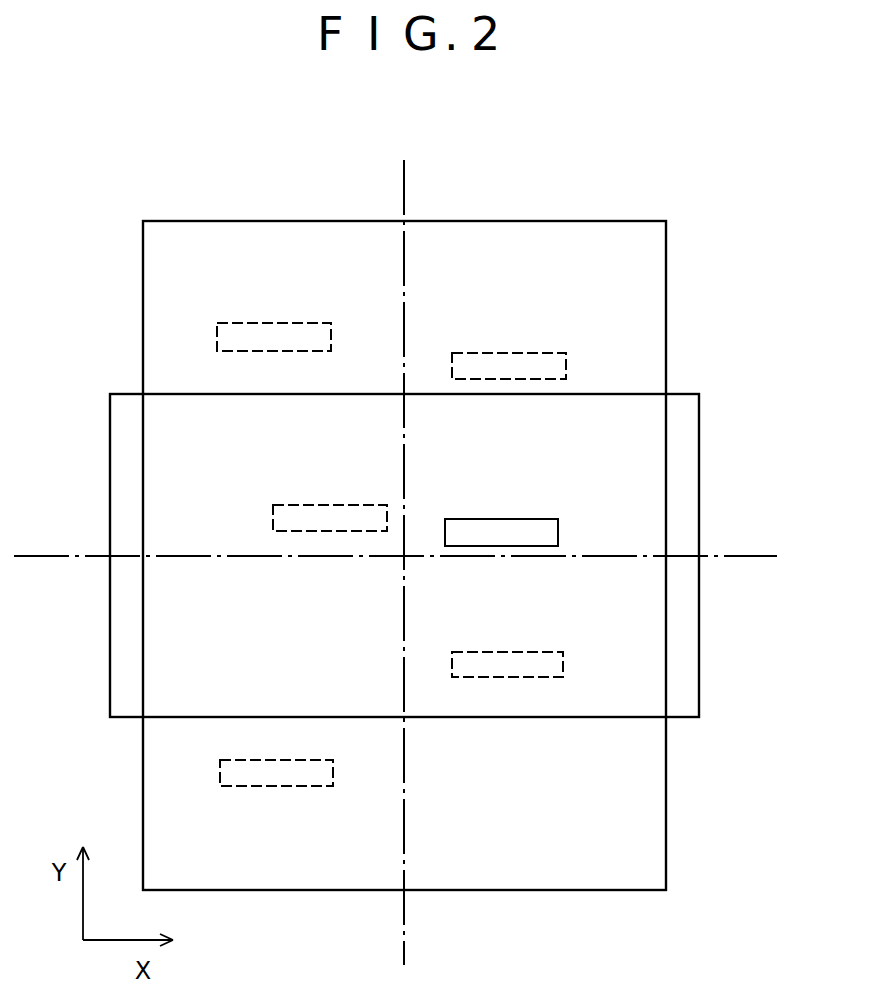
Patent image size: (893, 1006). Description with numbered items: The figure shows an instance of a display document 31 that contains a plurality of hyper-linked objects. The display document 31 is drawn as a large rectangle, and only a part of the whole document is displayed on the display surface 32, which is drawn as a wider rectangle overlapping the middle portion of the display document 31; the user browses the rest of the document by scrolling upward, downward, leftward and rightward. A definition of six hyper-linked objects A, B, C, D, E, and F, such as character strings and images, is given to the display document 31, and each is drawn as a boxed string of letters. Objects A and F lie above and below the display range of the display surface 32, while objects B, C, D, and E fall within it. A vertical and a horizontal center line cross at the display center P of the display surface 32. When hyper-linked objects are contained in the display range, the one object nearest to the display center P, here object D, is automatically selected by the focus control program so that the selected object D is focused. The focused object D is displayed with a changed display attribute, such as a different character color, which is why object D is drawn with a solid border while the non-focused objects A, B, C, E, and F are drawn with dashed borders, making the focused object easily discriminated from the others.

The display document 31 is at (609, 221).
The display surface 32 is at (699, 420).
The hyper-linked object A is at (263, 323).
The hyper-linked object B is at (500, 353).
The hyper-linked object C is at (320, 505).
The hyper-linked object D is at (493, 519).
The hyper-linked object E is at (497, 652).
The hyper-linked object F is at (273, 786).
The display center P is at (403, 557).